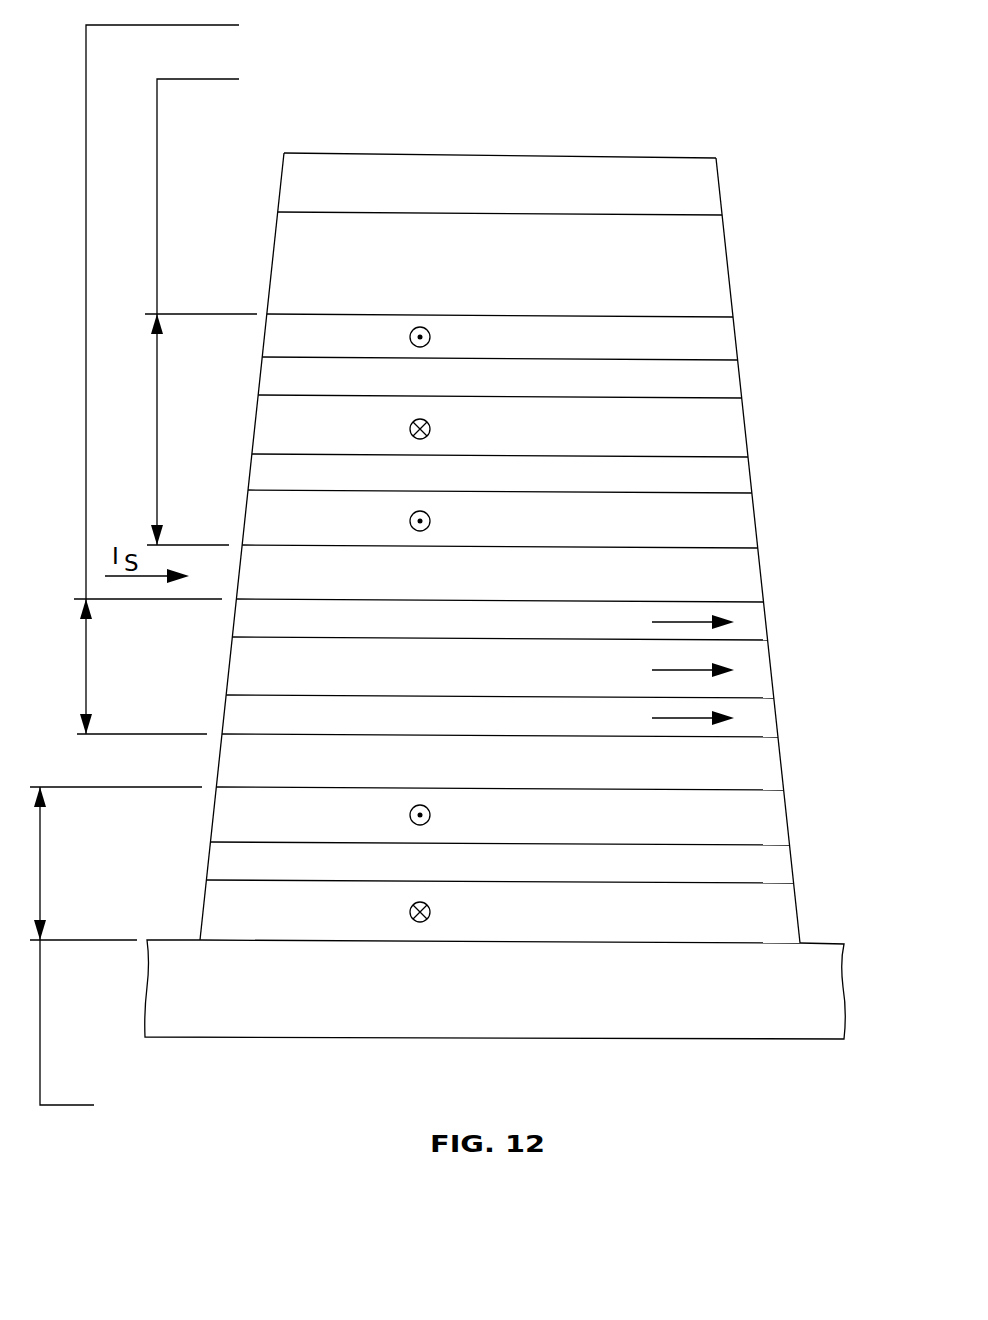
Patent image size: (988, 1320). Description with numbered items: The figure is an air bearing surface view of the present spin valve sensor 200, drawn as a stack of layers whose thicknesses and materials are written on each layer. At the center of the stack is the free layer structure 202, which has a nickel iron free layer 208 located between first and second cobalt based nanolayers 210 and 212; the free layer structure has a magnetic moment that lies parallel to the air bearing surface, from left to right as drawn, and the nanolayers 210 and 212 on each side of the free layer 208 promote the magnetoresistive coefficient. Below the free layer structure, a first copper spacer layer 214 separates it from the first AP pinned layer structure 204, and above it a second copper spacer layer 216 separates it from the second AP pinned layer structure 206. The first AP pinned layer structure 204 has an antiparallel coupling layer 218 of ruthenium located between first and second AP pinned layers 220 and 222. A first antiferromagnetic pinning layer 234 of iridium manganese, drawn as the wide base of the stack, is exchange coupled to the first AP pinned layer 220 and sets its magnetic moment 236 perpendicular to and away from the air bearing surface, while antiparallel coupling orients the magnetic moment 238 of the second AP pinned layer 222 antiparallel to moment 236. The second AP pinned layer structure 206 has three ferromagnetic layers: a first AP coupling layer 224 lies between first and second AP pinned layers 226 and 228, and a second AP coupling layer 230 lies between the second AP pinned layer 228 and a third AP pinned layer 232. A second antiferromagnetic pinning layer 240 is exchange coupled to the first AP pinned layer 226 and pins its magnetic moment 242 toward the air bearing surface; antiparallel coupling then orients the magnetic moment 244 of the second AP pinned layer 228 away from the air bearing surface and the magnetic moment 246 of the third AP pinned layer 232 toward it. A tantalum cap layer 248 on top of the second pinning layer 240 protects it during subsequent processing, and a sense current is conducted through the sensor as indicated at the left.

The spin valve sensor 200 is at (712, 112).
The free layer structure 202 is at (328, 375).
The first AP pinned layer structure 204 is at (166, 968).
The second AP pinned layer structure 206 is at (297, 306).
The free layer 208 is at (769, 664).
The first nanolayer 210 is at (774, 714).
The second nanolayer 212 is at (764, 617).
The first spacer layer 214 is at (779, 757).
The second spacer layer 216 is at (758, 566).
The antiparallel coupling layer 218 is at (790, 860).
The first AP pinned layer 220 is at (796, 912).
The second AP pinned layer 222 is at (785, 810).
The first AP coupling layer 224 is at (737, 372).
The first AP pinned layer 226 is at (733, 337).
The second AP pinned layer 228 is at (742, 424).
The second AP coupling layer 230 is at (748, 477).
The third AP pinned layer 232 is at (752, 518).
The first antiferromagnetic pinning layer 234 is at (715, 1037).
The magnetic moment 236 is at (418, 900).
The magnetic moment 238 is at (418, 803).
The second antiferromagnetic pinning layer 240 is at (727, 280).
The magnetic moment 242 is at (418, 325).
The magnetic moment 244 is at (418, 417).
The magnetic moment 246 is at (418, 509).
The cap layer 248 is at (717, 184).